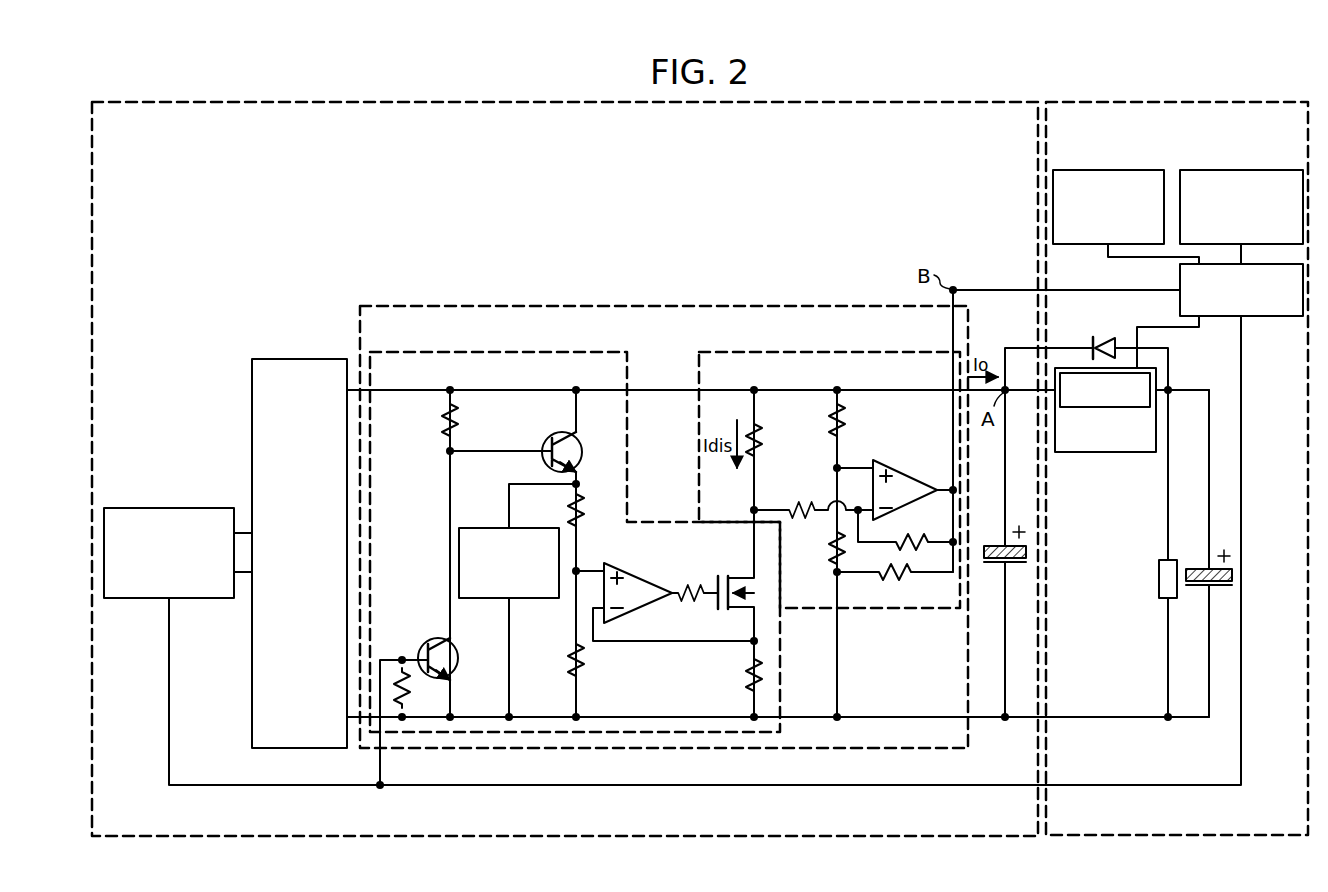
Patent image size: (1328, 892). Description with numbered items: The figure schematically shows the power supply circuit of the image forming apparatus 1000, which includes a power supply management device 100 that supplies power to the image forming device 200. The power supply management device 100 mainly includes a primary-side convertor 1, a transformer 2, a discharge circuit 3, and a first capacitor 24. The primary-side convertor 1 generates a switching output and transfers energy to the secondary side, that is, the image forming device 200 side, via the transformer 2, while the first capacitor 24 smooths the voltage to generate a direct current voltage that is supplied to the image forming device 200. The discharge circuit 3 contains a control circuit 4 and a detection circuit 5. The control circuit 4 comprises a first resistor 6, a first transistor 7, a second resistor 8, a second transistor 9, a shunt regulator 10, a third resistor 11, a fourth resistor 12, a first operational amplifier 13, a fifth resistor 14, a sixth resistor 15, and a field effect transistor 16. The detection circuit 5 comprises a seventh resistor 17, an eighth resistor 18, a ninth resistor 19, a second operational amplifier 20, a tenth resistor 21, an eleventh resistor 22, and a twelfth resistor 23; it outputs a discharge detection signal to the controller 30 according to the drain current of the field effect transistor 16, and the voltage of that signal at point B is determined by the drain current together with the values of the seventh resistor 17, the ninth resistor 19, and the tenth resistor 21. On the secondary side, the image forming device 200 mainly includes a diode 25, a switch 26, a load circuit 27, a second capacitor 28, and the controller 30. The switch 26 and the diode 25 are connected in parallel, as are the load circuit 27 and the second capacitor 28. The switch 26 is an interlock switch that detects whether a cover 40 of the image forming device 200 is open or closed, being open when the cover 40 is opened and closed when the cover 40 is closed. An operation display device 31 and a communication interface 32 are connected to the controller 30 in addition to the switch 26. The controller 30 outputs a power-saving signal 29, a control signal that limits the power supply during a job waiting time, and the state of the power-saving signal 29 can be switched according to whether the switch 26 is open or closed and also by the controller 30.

The image forming apparatus 1000 is at (158, 98).
The power supply management device 100 is at (1022, 86).
The image forming device 200 is at (1270, 100).
The primary-side convertor 1 is at (218, 507).
The transformer 2 is at (330, 357).
The discharge circuit 3 is at (385, 304).
The control circuit 4 is at (600, 352).
The detection circuit 5 is at (920, 352).
The first resistor 6 is at (462, 420).
The first transistor 7 is at (424, 641).
The second resistor 8 is at (410, 688).
The second transistor 9 is at (552, 431).
The shunt regulator 10 is at (534, 525).
The third resistor 11 is at (587, 508).
The fourth resistor 12 is at (566, 648).
The first operational amplifier 13 is at (636, 571).
The fifth resistor 14 is at (690, 605).
The sixth resistor 15 is at (740, 673).
The field effect transistor (FET) 16 is at (748, 596).
The seventh resistor 17 is at (766, 433).
The eighth resistor 18 is at (804, 499).
The ninth resistor 19 is at (849, 419).
The second operational amplifier 20 is at (902, 469).
The tenth resistor 21 is at (830, 560).
The eleventh resistor 22 is at (922, 532).
The twelfth resistor 23 is at (905, 578).
The first capacitor 24 is at (994, 542).
The diode 25 is at (1092, 342).
The switch 26 is at (1105, 409).
The load circuit 27 is at (1160, 600).
The second capacitor 28 is at (1204, 588).
The power-saving signal 29 is at (1181, 784).
The controller 30 is at (1276, 318).
The operation display device 31 is at (1276, 169).
The communication interface (communication I/F) 32 is at (1138, 169).
The cover 40 is at (1105, 430).